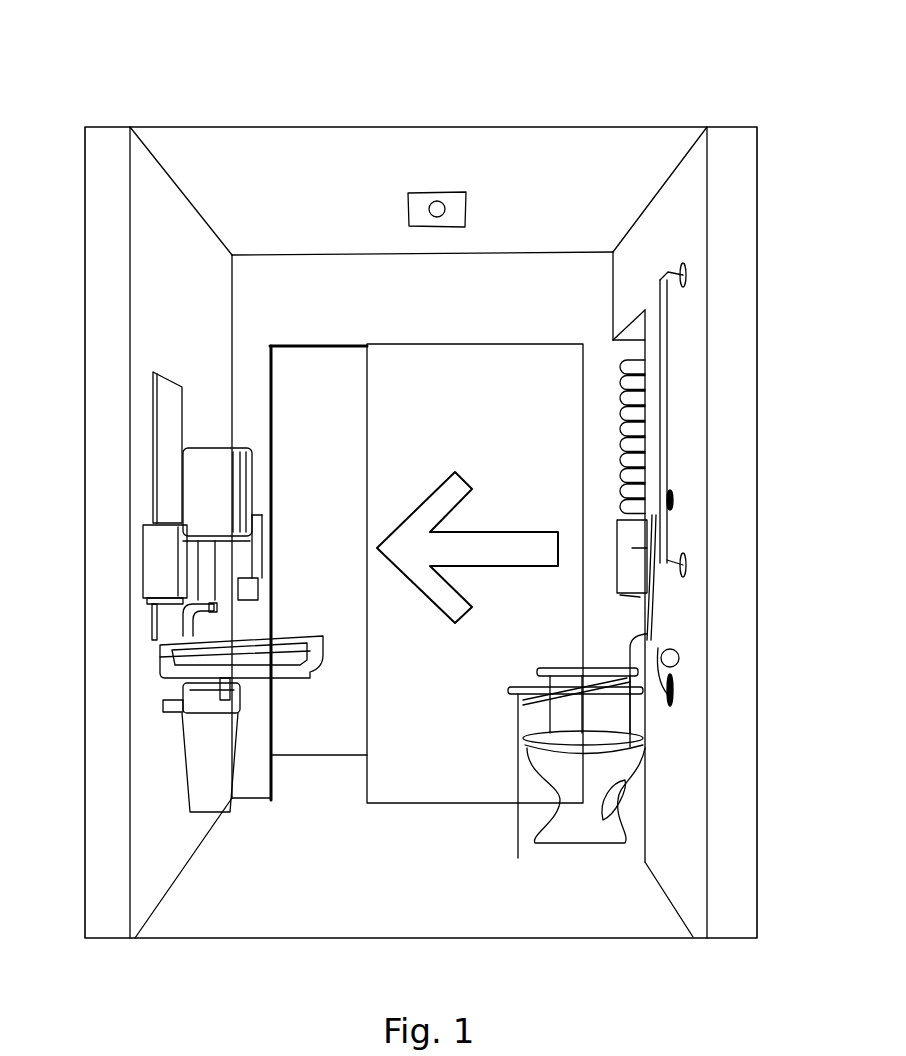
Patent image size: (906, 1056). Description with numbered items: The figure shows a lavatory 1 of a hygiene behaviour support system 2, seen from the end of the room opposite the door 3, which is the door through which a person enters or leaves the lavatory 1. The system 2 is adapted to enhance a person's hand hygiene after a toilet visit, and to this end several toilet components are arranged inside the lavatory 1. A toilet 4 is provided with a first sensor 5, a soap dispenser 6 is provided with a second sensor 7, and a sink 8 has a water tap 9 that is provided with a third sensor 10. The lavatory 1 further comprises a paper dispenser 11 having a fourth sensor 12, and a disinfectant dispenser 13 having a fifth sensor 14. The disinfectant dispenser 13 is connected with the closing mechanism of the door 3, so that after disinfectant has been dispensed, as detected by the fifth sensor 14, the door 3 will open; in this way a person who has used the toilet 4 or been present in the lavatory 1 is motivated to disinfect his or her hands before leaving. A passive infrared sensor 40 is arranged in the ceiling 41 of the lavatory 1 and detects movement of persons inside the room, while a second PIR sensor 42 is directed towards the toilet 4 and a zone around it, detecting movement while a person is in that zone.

The lavatory 1 is at (210, 207).
The hygiene behaviour support system 2 is at (532, 296).
The door 3 is at (430, 372).
The toilet 4 is at (637, 763).
The first sensor 5 is at (647, 620).
The soap dispenser 6 is at (155, 588).
The second sensor 7 is at (170, 600).
The sink 8 is at (280, 665).
The water tap 9 is at (183, 633).
The third sensor 10 is at (197, 633).
The paper dispenser 11 is at (205, 455).
The fourth sensor 12 is at (188, 541).
The disinfectant dispenser 13 is at (258, 545).
The fifth sensor 14 is at (250, 583).
The passive infrared (PIR) sensor 40 is at (424, 198).
The ceiling 41 is at (305, 146).
The second PIR sensor 42 is at (432, 203).